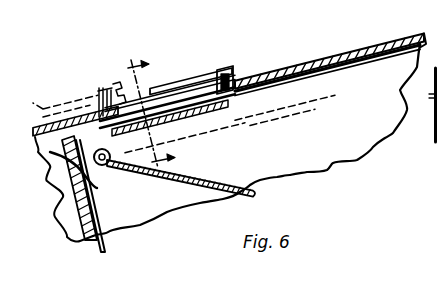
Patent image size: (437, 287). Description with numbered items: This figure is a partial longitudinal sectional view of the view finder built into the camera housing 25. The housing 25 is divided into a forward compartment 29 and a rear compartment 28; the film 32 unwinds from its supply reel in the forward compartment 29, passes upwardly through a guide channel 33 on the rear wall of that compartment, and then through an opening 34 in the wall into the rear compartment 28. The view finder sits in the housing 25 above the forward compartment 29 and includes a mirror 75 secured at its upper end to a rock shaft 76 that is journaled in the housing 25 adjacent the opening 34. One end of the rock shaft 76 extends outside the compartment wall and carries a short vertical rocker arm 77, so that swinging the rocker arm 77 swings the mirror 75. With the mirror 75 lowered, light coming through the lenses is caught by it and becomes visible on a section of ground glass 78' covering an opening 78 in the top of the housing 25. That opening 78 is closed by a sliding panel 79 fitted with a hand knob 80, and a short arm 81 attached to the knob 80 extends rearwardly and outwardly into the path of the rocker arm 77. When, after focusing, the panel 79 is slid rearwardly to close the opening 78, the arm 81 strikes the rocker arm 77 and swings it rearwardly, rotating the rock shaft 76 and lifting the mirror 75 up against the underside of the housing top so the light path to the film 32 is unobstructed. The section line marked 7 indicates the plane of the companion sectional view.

The section line 7- 7 is at (159, 113).
The housing 25 is at (348, 50).
The rear compartment 28 is at (47, 193).
The forward compartment 29 is at (317, 150).
The film 32 is at (37, 160).
The guide channel 33 is at (121, 230).
The opening 34 is at (62, 215).
The mirror 75 is at (238, 163).
The rock shaft 76 is at (106, 168).
The rocker arm 77 is at (97, 97).
The opening 78 is at (109, 81).
The ground glass 78' is at (184, 120).
The sliding panel 79 is at (290, 73).
The hand knob 80 is at (226, 64).
The arm 81 is at (200, 80).